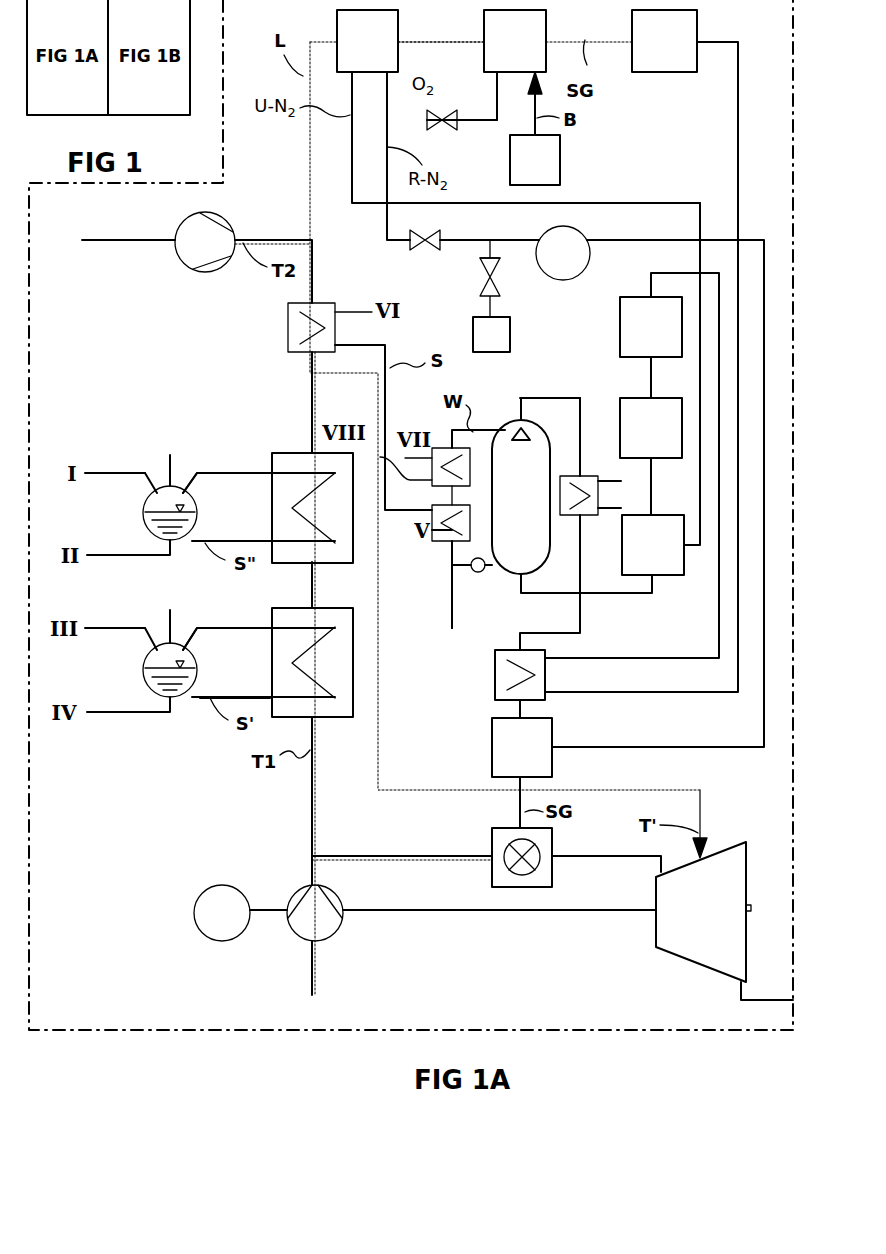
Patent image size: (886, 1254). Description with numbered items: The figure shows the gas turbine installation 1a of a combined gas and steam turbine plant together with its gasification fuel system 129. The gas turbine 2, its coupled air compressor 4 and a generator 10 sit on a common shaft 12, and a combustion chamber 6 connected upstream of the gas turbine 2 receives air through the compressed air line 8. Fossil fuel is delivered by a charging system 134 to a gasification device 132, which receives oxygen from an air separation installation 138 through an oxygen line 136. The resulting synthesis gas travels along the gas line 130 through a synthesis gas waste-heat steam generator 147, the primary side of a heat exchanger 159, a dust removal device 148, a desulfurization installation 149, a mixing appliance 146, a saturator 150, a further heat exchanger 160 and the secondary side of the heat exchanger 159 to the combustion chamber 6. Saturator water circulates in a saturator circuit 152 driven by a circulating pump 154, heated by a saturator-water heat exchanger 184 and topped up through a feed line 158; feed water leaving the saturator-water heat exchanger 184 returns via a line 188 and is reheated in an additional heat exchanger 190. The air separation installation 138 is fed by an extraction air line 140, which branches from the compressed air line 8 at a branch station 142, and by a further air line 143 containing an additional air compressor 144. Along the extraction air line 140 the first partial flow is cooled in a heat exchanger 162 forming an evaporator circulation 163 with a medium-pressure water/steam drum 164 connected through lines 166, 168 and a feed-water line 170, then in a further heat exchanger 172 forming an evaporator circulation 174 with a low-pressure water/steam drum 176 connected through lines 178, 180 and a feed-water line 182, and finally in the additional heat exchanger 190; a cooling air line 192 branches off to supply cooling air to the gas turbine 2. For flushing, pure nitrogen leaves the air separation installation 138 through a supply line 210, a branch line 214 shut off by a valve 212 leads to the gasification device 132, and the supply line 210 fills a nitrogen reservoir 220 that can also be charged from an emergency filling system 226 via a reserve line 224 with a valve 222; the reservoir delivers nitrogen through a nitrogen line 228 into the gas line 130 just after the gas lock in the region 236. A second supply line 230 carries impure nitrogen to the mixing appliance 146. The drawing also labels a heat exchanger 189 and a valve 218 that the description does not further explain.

The gas turbine installation 1a is at (580, 1060).
The gas turbine 2 is at (692, 964).
The air compressor 4 is at (334, 936).
The combustion chamber 6 is at (553, 875).
The compressed air line 8 is at (318, 869).
The generator 10 is at (243, 891).
The common shaft 12 is at (268, 915).
The fuel system 129 is at (571, 383).
The gas line 130 is at (735, 122).
The gasification device 132 is at (500, 57).
The charging system 134 is at (560, 155).
The oxygen line 136 is at (423, 43).
The air separation installation 138 is at (353, 57).
The extraction air line 140 is at (318, 266).
The branch station 142 is at (319, 853).
The further air line 143 is at (268, 240).
The additional air compressor 144 is at (176, 229).
The mixing appliance 146 is at (639, 558).
The synthesis gas waste-heat steam generator 147 is at (649, 57).
The dust removal device 148 is at (637, 341).
The desulfurization installation 149 is at (637, 441).
The saturator 150 is at (505, 425).
The saturator circuit 152 is at (446, 495).
The circulating pump 154 is at (480, 573).
The feed line 158 is at (452, 610).
The heat exchanger 159 is at (495, 676).
The further heat exchanger 160 is at (583, 476).
The heat exchanger 162 is at (290, 608).
The evaporator circulation 163 is at (250, 636).
The water/steam drum 164 is at (182, 643).
The line 166 is at (127, 627).
The line 168 is at (125, 710).
The feed-water line 170 is at (167, 624).
The further heat exchanger 172 is at (288, 453).
The evaporator circulation 174 is at (248, 478).
The water/steam drum 176 is at (180, 482).
The line 178 is at (128, 473).
The line 180 is at (138, 546).
The feed-water line 182 is at (167, 467).
The saturator-water heat exchanger 184 is at (447, 543).
The line 188 is at (357, 310).
The heat exchanger 189 is at (441, 447).
The additional heat exchanger 190 is at (288, 331).
The cooling air line 192 is at (703, 816).
The supply line 210 is at (511, 240).
The valve 212 is at (443, 130).
The branch line 214 is at (497, 108).
The valve 218 is at (433, 252).
The nitrogen reservoir 220 is at (567, 281).
The valve 222 is at (500, 270).
The reserve line 224 is at (485, 302).
The emergency filling system 226 is at (511, 338).
The nitrogen line 228 is at (755, 240).
The second supply line 230 is at (636, 204).
The region 236 is at (492, 745).